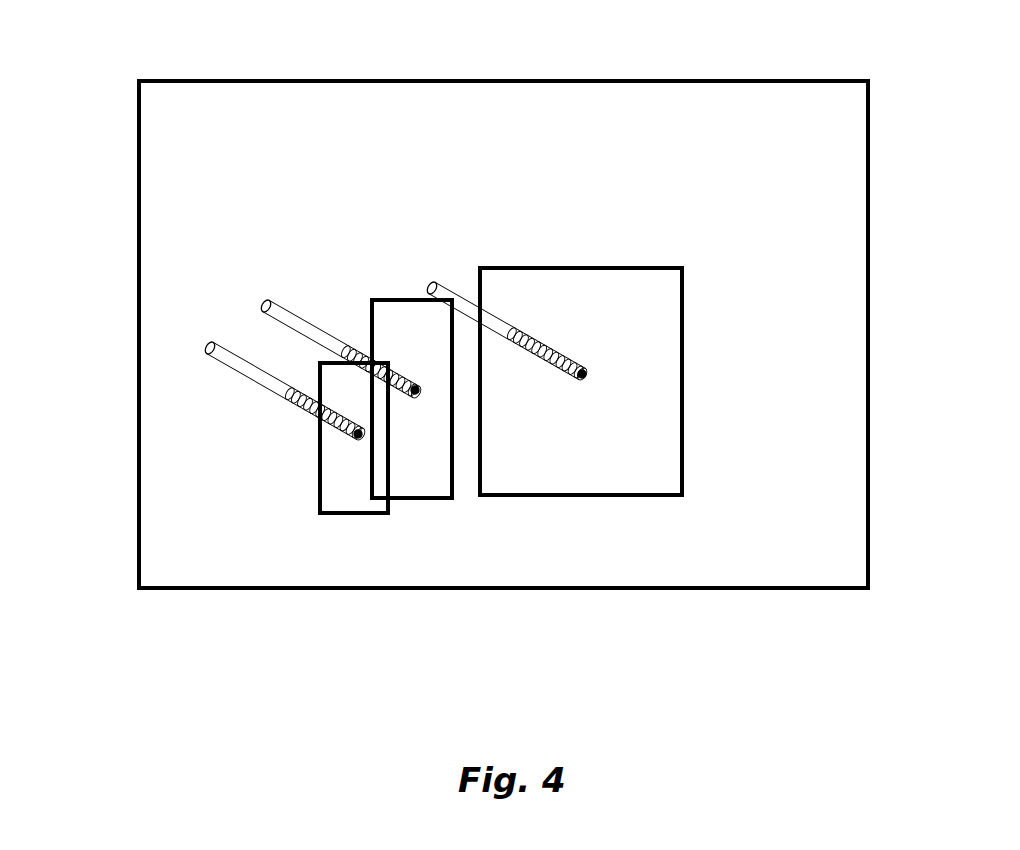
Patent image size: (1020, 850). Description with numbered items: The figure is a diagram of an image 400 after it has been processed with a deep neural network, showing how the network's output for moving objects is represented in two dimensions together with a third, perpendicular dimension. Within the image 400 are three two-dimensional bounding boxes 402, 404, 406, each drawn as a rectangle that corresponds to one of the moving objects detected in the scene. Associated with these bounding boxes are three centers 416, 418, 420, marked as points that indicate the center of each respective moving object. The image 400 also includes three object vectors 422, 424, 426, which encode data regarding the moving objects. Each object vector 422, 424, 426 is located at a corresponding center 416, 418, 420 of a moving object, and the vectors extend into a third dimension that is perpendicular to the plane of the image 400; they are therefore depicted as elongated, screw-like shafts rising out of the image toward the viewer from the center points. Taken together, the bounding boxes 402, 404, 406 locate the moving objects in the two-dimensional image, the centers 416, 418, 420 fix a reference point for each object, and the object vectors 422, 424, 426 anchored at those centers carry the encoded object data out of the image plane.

The image 400 is at (332, 78).
The 2D bounding box 402 is at (353, 515).
The 2D bounding box 404 is at (422, 500).
The 2D bounding box 406 is at (533, 503).
The center 416 is at (358, 434).
The center 418 is at (415, 390).
The center 420 is at (582, 374).
The object vector 422 is at (241, 380).
The object vector 424 is at (271, 318).
The object vector 426 is at (427, 283).